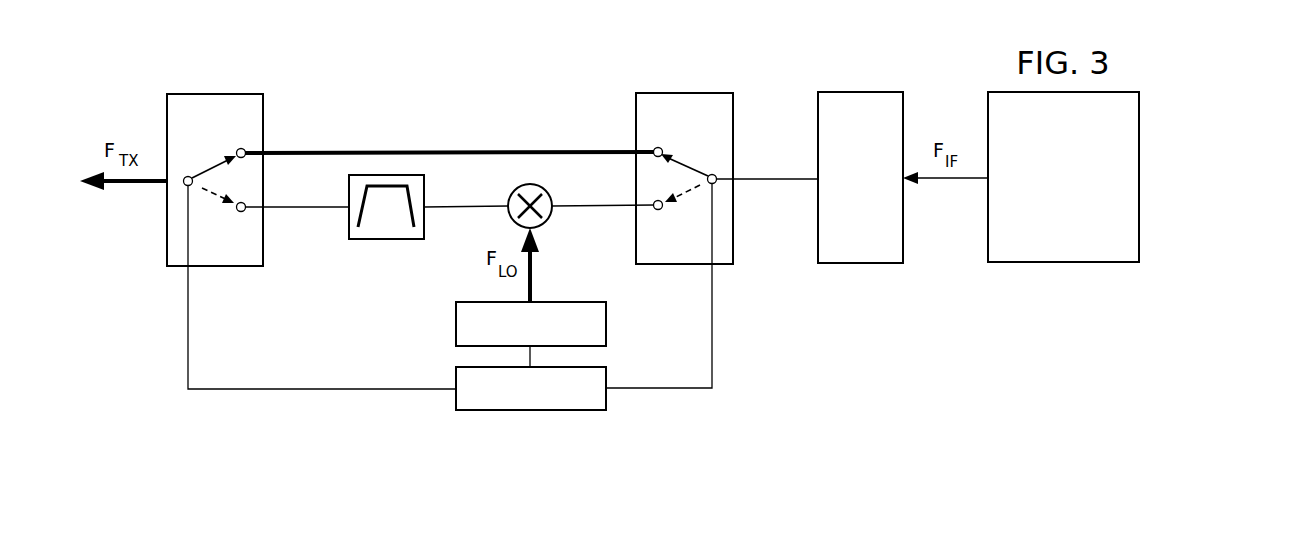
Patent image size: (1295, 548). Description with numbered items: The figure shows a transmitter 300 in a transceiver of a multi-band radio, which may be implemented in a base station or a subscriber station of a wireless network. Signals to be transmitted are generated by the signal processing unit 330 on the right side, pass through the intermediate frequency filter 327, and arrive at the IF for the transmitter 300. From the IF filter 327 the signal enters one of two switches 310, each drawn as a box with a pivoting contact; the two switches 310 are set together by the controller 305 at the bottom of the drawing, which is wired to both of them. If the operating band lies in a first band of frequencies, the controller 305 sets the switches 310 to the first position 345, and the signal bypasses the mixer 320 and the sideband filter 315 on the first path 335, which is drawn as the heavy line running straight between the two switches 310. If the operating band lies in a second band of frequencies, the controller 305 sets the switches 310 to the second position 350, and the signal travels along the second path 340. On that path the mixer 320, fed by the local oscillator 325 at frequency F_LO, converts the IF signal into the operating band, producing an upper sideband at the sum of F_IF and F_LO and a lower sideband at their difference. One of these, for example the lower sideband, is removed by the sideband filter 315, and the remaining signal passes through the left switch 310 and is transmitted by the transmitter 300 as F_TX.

The transmitter 300 is at (1178, 133).
The controller 305 is at (455, 401).
The switches 310 is at (202, 91).
The sideband filter 315 is at (348, 198).
The mixer 320 is at (545, 226).
The local oscillator 325 is at (455, 324).
The intermediate frequency filter 327 is at (881, 218).
The signal processing unit 330 is at (1084, 228).
The first path 335 is at (448, 150).
The second path 340 is at (307, 210).
The first position 345 is at (215, 162).
The second position 350 is at (207, 200).